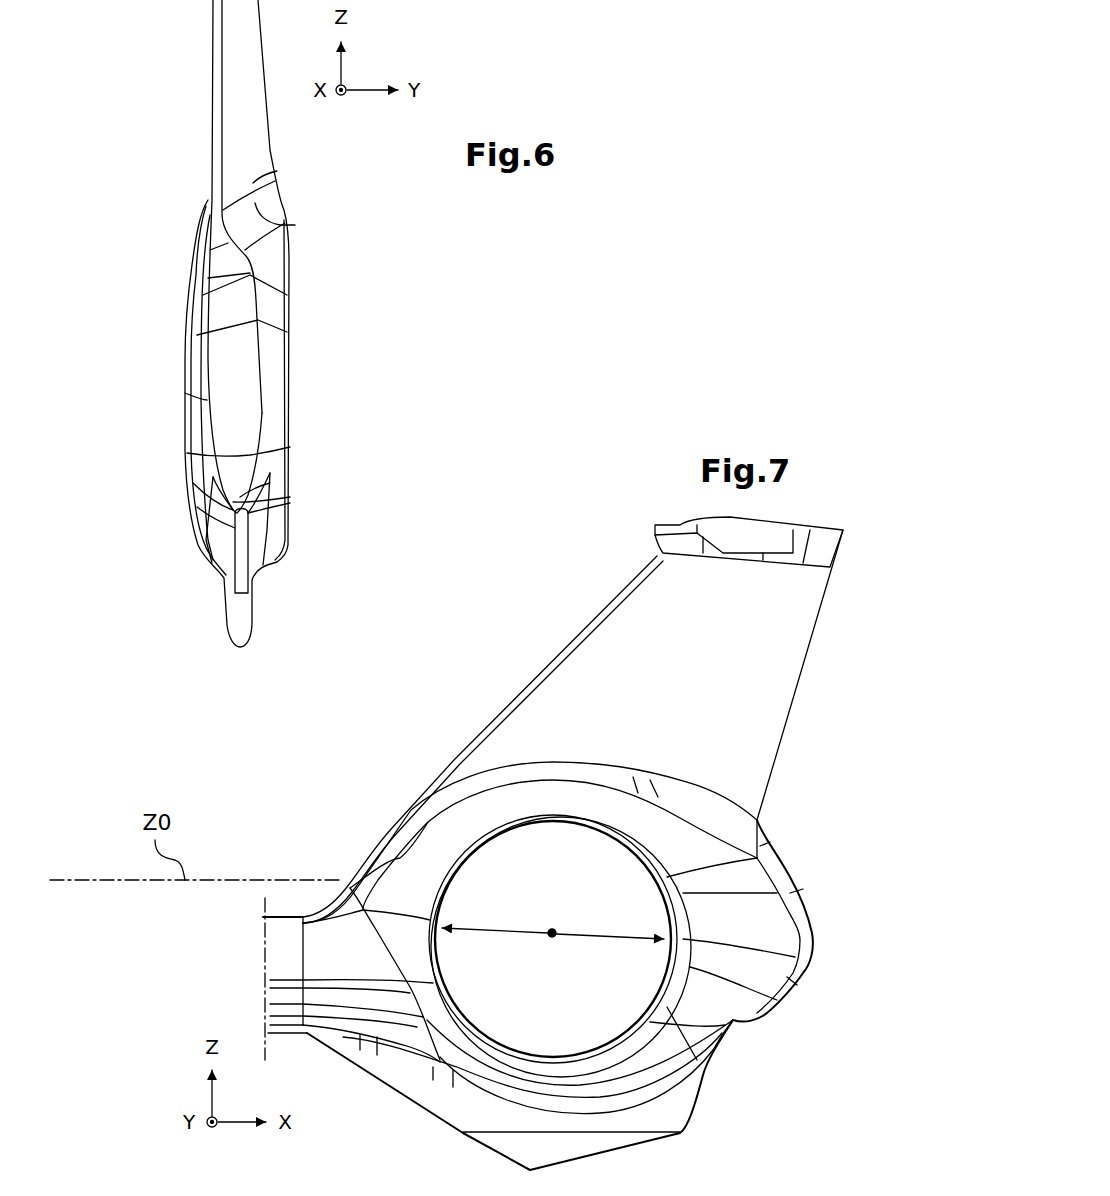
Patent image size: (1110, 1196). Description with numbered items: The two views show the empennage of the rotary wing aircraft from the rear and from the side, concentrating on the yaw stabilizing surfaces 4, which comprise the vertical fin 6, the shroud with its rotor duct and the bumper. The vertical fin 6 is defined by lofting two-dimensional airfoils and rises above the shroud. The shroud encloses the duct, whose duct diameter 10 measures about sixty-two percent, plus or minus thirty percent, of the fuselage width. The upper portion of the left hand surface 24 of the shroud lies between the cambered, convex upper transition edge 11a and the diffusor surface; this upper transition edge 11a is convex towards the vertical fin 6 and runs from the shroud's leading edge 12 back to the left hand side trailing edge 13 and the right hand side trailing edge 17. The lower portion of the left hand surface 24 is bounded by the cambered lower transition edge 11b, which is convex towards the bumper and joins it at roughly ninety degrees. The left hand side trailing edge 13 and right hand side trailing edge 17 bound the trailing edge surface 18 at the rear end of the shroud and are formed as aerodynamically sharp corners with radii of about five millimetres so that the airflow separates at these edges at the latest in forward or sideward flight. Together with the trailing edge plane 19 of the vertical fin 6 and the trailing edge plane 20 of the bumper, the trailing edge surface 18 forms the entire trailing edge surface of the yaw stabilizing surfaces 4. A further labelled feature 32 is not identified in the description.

In FIG. 6, the yaw stabilizing surfaces 4 is at (360, 314).
In FIG. 6, the vertical fin 6 is at (237, 50).
In FIG. 7, the vertical fin 6 is at (618, 638).
In FIG. 7, the duct diameter 10 is at (588, 955).
In FIG. 6, the upper transition edge 11a is at (252, 180).
In FIG. 7, the upper transition edge 11a is at (635, 783).
In FIG. 7, the lower transition edge 11b is at (398, 1050).
In FIG. 7, the shroud's leading edge 12 is at (334, 850).
In FIG. 6, the left hand side trailing edge 13 is at (196, 360).
In FIG. 7, the left hand side trailing edge 13 is at (815, 940).
In FIG. 6, the right hand side trailing edge 17 is at (270, 369).
In FIG. 7, the right hand side trailing edge 17 is at (805, 968).
In FIG. 6, the trailing edge surface 18 is at (226, 388).
In FIG. 6, the trailing edge plane of the vertical fin 19 is at (215, 182).
In FIG. 6, the trailing edge plane of the bumper 20 is at (232, 535).
In FIG. 7, the left hand surface of the shroud 24 is at (755, 922).
In FIG. 7, the junction 32 is at (383, 832).